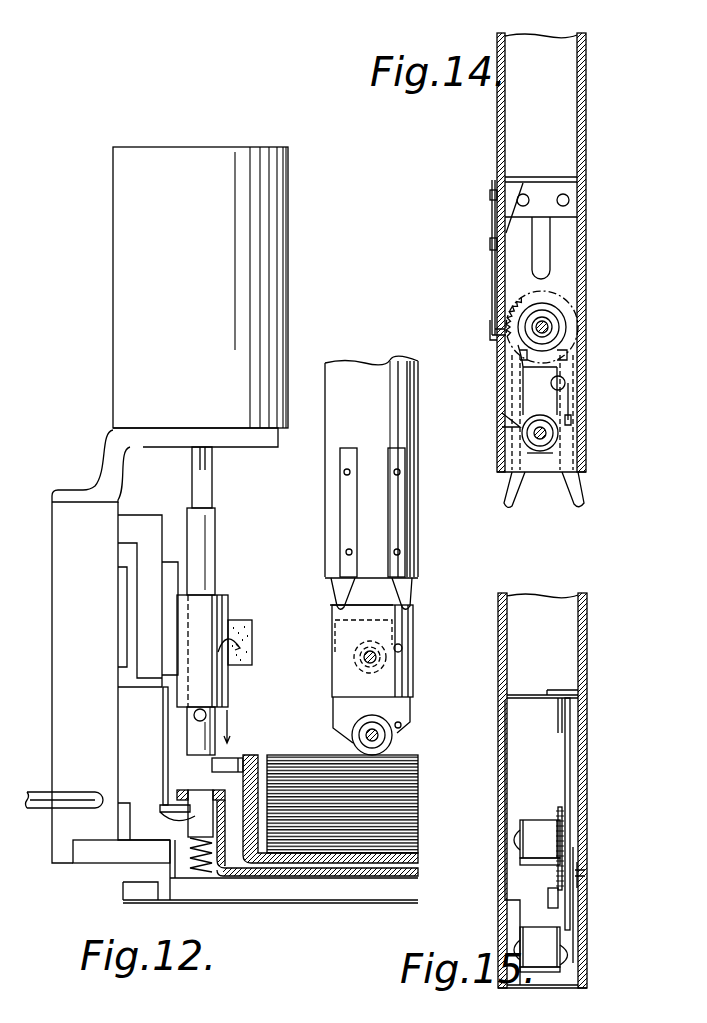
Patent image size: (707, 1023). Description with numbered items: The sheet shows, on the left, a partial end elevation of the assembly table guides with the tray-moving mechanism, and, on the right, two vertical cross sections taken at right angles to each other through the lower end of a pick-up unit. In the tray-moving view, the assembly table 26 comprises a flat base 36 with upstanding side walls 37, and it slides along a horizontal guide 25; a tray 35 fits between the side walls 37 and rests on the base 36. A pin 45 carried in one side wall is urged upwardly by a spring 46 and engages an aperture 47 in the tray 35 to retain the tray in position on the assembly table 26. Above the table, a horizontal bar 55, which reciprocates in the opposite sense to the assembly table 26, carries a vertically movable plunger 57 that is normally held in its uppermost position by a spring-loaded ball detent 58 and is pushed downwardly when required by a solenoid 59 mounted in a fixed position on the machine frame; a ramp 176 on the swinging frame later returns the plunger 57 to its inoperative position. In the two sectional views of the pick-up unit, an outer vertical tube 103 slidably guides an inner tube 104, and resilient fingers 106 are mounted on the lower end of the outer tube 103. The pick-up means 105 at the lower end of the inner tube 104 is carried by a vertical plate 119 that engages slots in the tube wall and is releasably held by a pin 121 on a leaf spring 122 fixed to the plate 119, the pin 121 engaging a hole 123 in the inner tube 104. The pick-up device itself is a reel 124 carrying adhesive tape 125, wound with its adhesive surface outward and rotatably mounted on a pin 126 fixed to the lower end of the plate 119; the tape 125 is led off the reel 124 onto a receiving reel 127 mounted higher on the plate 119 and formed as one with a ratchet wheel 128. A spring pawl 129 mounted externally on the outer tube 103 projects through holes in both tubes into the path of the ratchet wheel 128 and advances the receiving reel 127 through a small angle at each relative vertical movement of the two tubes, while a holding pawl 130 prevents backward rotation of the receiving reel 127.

In FIG. 12, the solenoid 59 is at (213, 153).
In FIG. 12, the horizontal bar 55 is at (142, 619).
In FIG. 12, the spring-loaded ball detent 58 is at (240, 620).
In FIG. 12, the plunger 57 is at (190, 730).
In FIG. 12, the aperture 47 is at (167, 808).
In FIG. 12, the ramp 176 is at (88, 806).
In FIG. 12, the pin 45 is at (195, 827).
In FIG. 12, the horizontal guide 25 is at (83, 858).
In FIG. 12, the side wall 37 is at (181, 868).
In FIG. 12, the spring 46 is at (210, 866).
In FIG. 12, the flat base 36 is at (300, 887).
In FIG. 12, the assembly table 26 is at (393, 910).
In FIG. 12, the tray 35 is at (418, 874).
In FIG. 12, the outer vertical tube 103 is at (377, 372).
In FIG. 14, the outer vertical tube 103 is at (497, 150).
In FIG. 15, the outer vertical tube 103 is at (498, 605).
In FIG. 14, the inner tube 104 is at (577, 136).
In FIG. 15, the inner tube 104 is at (578, 606).
In FIG. 12, the resilient finger 106 is at (405, 594).
In FIG. 14, the resilient finger 106 is at (505, 502).
In FIG. 12, the reel 124 is at (365, 720).
In FIG. 14, the reel 124 is at (532, 443).
In FIG. 12, the adhesive tape 125 is at (358, 738).
In FIG. 14, the adhesive tape 125 is at (540, 457).
In FIG. 14, the vertical plate 119 is at (518, 255).
In FIG. 15, the vertical plate 119 is at (563, 745).
In FIG. 14, the ratchet wheel 128 is at (512, 305).
In FIG. 15, the ratchet wheel 128 is at (557, 812).
In FIG. 14, the spring pawl 129 is at (494, 326).
In FIG. 14, the receiving reel 127 is at (546, 327).
In FIG. 14, the holding pawl 130 is at (530, 378).
In FIG. 14, the pick-up means 105 is at (487, 446).
In FIG. 15, the pick-up means 105 is at (485, 937).
In FIG. 14, the pin 126 is at (550, 441).
In FIG. 15, the leaf spring 122 is at (568, 852).
In FIG. 15, the hole 123 is at (583, 877).
In FIG. 15, the pin 121 is at (580, 872).